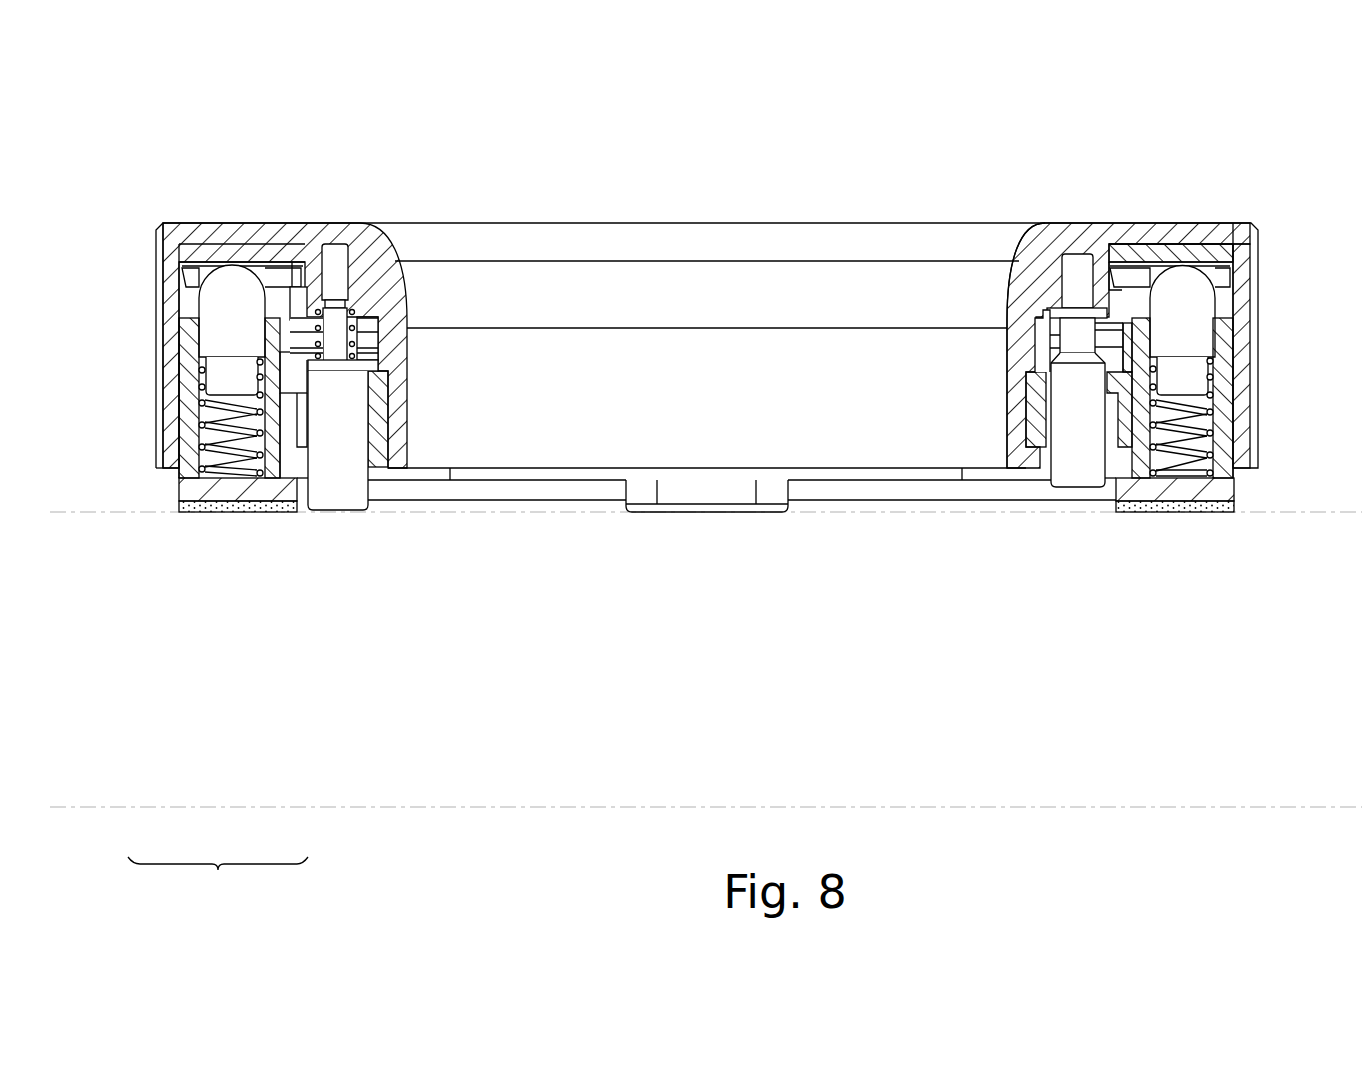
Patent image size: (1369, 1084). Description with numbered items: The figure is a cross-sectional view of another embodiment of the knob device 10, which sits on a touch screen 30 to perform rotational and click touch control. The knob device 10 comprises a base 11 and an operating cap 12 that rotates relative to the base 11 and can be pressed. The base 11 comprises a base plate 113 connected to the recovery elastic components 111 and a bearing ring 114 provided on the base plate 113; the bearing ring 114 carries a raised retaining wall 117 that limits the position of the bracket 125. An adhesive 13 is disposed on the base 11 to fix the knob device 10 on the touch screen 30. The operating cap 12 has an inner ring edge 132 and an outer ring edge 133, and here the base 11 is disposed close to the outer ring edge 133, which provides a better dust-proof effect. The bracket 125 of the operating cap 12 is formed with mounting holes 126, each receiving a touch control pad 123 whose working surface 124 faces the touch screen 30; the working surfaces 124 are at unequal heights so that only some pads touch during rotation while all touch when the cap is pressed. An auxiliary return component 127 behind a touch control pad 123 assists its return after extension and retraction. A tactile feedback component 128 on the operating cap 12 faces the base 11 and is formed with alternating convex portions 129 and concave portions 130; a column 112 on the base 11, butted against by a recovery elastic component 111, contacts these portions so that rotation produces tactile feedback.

The knob device 10 is at (717, 222).
The base 11 is at (218, 877).
The operating cap 12 is at (237, 223).
The adhesive 13 is at (1180, 500).
The touch screen 30 is at (593, 808).
The recovery elastic component 111 is at (1190, 453).
The column 112 is at (1190, 327).
The base plate 113 is at (238, 483).
The bearing ring 114 is at (187, 453).
The retaining wall 117 is at (293, 318).
The touch control pad 123 is at (347, 470).
The working surface 124 is at (1077, 490).
The bracket 125 is at (200, 430).
The mounting hole 126 is at (380, 417).
The auxiliary return component 127 is at (357, 305).
The tactile feedback component 128 is at (1222, 228).
The convex portion 129 is at (1150, 265).
The concave portion 130 is at (1187, 282).
The inner ring edge 132 is at (1010, 302).
The outer ring edge 133 is at (163, 268).